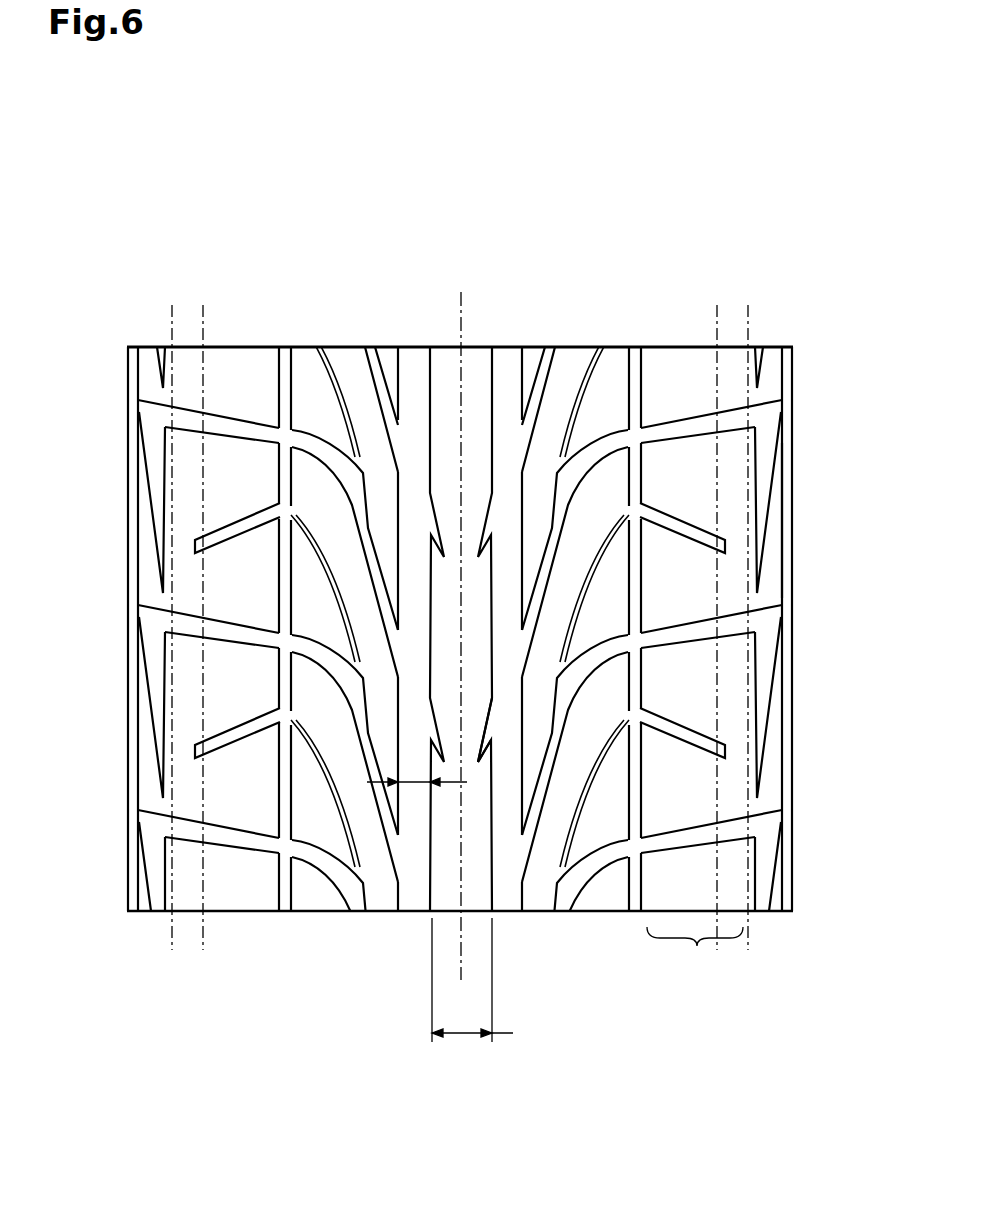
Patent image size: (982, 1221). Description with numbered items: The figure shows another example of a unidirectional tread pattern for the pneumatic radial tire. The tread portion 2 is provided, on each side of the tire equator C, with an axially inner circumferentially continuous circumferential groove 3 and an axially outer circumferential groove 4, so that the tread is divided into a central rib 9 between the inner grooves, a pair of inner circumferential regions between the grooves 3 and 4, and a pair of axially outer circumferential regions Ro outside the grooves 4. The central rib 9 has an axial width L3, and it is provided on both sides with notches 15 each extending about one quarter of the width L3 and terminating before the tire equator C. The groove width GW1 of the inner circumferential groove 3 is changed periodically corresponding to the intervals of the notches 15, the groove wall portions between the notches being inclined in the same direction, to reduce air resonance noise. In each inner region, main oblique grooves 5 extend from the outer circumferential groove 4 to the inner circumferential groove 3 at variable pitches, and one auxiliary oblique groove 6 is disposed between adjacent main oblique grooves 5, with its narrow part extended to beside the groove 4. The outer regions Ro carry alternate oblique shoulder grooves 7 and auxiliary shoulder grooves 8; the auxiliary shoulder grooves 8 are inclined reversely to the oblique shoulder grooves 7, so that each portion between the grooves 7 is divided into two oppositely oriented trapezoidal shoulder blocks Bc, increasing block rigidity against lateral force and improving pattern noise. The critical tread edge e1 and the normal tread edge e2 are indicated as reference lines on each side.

The tread portion 2 is at (249, 350).
The axially inner circumferential groove 3 is at (413, 348).
The axially outer circumferential groove 4 is at (300, 345).
The main oblique groove 5 is at (363, 541).
The auxiliary oblique groove 6 is at (337, 606).
The oblique shoulder groove 7 is at (207, 431).
The auxiliary shoulder groove 8 is at (227, 532).
The central rib 9 is at (448, 889).
The notch 15 is at (483, 752).
The tire equator C is at (462, 619).
The critical tread edge e1 is at (172, 318).
The normal tread edge e2 is at (203, 318).
The trapezoidal shoulder block Bc is at (693, 473).
The axially outer circumferential region Ro is at (695, 951).
The groove width of inner circumferential groove GW1 is at (415, 786).
The axial width of central rib L3 is at (493, 983).